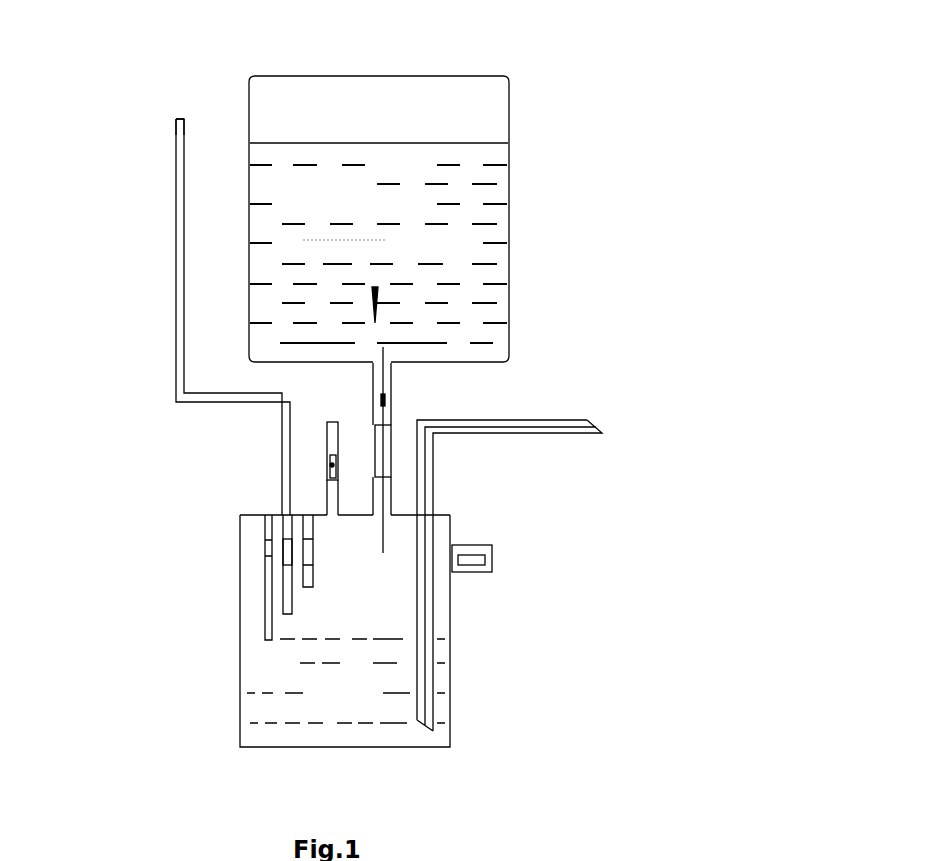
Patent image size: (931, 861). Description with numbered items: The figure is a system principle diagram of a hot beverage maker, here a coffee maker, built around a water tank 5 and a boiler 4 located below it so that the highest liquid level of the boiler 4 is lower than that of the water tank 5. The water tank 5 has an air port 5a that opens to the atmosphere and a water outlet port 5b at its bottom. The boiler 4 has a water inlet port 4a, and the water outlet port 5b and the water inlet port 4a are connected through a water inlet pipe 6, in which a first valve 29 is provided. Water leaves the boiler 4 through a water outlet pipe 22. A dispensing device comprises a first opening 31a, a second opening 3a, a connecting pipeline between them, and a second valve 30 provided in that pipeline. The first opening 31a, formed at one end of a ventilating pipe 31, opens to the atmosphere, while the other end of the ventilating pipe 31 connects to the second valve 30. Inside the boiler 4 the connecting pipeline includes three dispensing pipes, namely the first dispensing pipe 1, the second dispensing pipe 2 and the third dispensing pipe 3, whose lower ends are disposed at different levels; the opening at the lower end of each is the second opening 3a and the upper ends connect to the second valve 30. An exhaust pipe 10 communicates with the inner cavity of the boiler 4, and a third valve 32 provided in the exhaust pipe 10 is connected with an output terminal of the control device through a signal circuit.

The first dispensing pipe 1 is at (307, 532).
The second dispensing pipe 2 is at (287, 594).
The third dispensing pipe 3 is at (265, 625).
The second opening 3a is at (268, 640).
The boiler 4 is at (240, 716).
The water inlet port 4a is at (382, 522).
The water tank 5 is at (495, 263).
The air port 5a is at (498, 77).
The water outlet port 5b is at (387, 362).
The water inlet pipe 6 is at (378, 386).
The exhaust pipe 10 is at (330, 431).
The water outlet pipe 22 is at (562, 422).
The first valve 29 is at (387, 443).
The second valve 30 is at (287, 553).
The ventilating pipe 31 is at (182, 195).
The first opening 31a is at (182, 119).
The third valve 32 is at (330, 465).